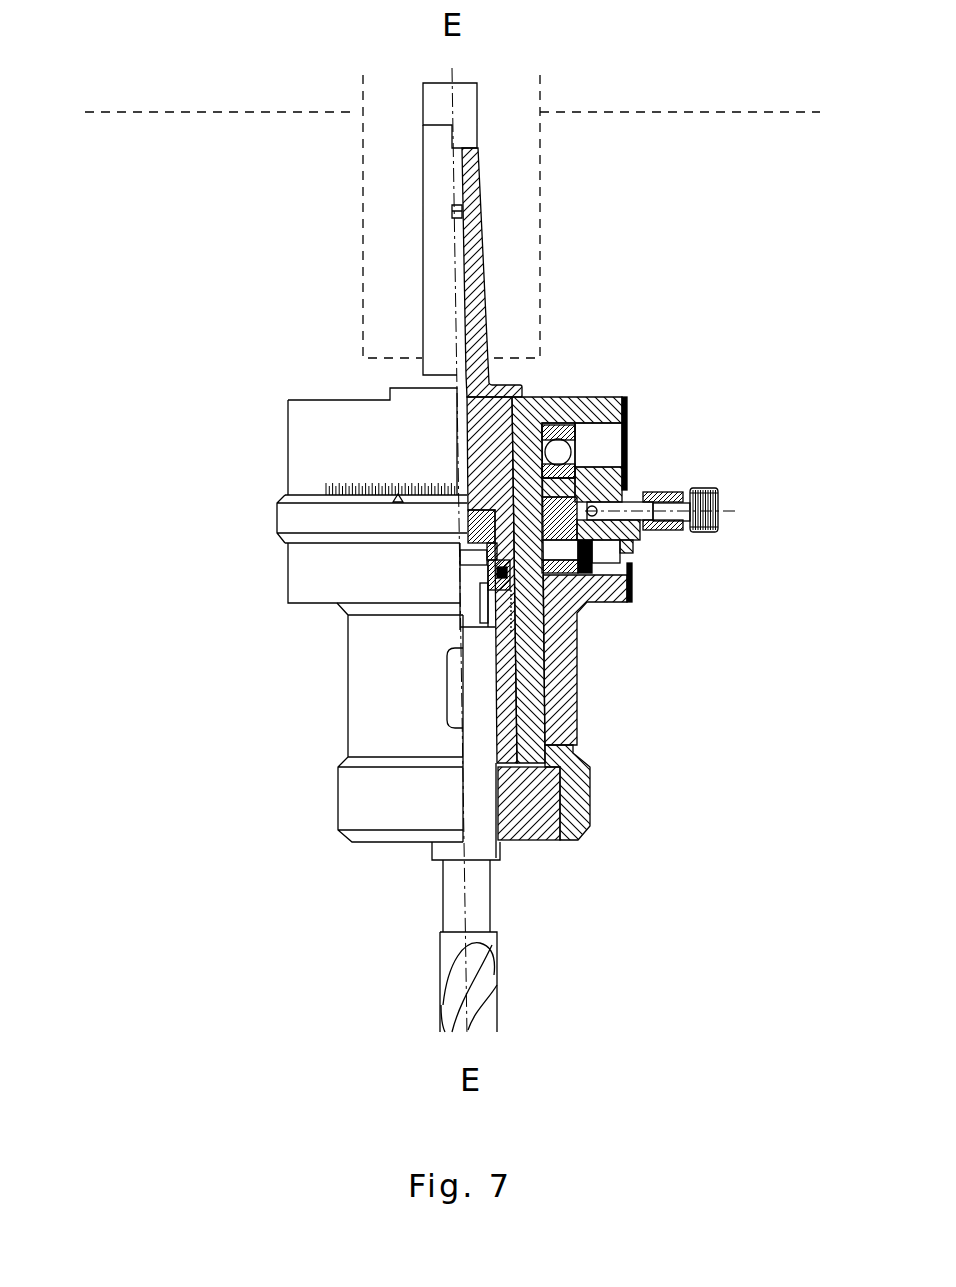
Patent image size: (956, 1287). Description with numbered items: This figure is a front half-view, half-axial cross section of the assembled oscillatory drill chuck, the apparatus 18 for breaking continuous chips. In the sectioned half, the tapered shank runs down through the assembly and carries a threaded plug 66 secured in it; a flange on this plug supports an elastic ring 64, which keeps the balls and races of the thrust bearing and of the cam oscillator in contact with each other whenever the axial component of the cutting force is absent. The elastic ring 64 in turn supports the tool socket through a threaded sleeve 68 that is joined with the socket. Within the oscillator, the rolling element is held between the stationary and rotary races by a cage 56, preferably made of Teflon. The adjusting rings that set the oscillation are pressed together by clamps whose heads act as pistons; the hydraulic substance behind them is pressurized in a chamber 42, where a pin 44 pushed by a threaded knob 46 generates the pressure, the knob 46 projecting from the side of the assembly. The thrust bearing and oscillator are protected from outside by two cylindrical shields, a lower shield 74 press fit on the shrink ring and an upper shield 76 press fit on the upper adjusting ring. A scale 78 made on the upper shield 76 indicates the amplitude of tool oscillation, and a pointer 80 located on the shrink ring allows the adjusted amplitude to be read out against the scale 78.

The apparatus for breaking continuous chips 18 is at (255, 889).
The chamber 42 is at (628, 483).
The pin 44 is at (640, 533).
The threaded knob 46 is at (720, 532).
The cage 56 is at (594, 569).
The elastic ring 64 is at (488, 578).
The threaded plug 66 is at (515, 445).
The threaded sleeve 68 is at (545, 645).
The lower shield 74 is at (631, 580).
The upper shield 76 is at (628, 437).
The scale 78 is at (355, 483).
The pointer 80 is at (398, 500).